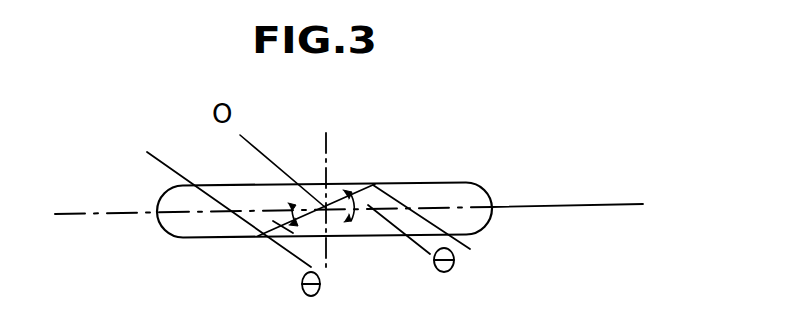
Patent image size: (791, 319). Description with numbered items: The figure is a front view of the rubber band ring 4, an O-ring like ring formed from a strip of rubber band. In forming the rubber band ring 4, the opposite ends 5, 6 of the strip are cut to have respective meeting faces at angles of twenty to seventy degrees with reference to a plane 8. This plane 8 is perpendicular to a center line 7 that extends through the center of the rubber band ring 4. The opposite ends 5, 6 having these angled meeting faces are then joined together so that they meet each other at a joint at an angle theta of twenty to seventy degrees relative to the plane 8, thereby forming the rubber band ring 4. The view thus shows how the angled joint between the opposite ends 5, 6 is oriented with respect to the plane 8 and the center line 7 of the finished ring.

The rubber band ring 4 is at (443, 192).
The opposite end of the strip of rubber band 5 is at (217, 211).
The opposite end of the strip of rubber band 6 is at (470, 249).
The center line 7 is at (326, 143).
The plane 8 is at (613, 204).